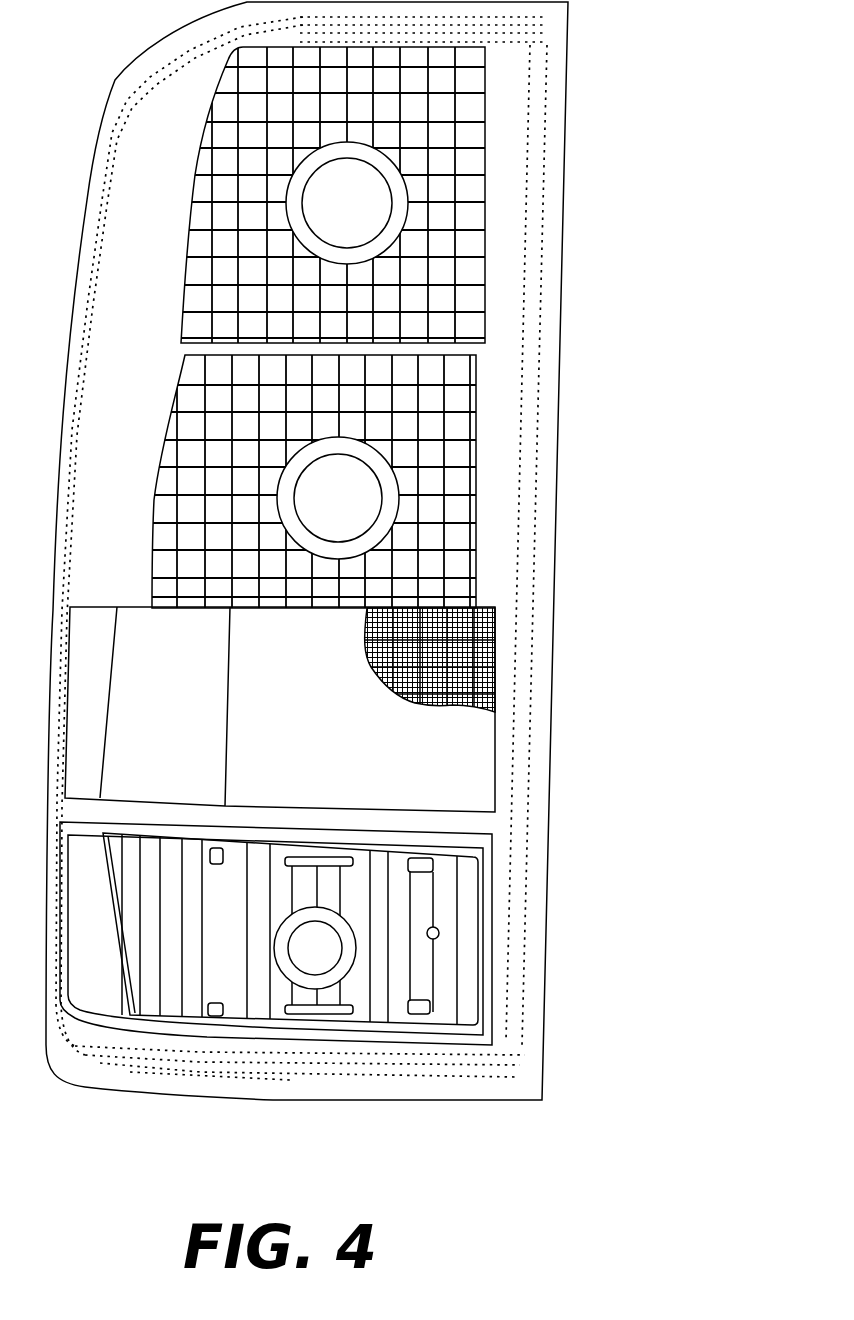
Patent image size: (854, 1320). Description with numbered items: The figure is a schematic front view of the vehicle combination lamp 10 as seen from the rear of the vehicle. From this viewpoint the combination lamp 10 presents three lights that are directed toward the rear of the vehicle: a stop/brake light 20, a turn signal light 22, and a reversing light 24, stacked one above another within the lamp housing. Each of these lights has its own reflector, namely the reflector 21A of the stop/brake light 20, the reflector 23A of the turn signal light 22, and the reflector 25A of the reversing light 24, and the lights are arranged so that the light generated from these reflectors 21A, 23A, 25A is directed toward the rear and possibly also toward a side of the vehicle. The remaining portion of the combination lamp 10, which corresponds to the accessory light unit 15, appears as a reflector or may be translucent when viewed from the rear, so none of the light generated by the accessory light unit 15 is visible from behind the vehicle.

The vehicle combination lamp 10 is at (453, 1112).
The stop/brake light 20 is at (586, 305).
The reflector of the stop/brake light 21A is at (358, 197).
The turn signal light 22 is at (571, 535).
The reflector of the turn signal light 23A is at (348, 497).
The accessory light unit 15 is at (566, 702).
The reversing light 24 is at (562, 930).
The reflector of the reversing light 25A is at (313, 966).